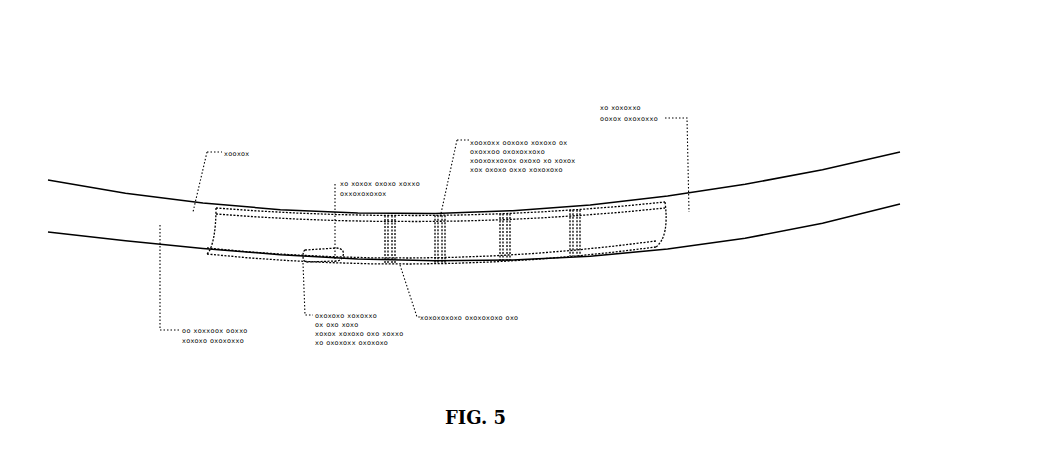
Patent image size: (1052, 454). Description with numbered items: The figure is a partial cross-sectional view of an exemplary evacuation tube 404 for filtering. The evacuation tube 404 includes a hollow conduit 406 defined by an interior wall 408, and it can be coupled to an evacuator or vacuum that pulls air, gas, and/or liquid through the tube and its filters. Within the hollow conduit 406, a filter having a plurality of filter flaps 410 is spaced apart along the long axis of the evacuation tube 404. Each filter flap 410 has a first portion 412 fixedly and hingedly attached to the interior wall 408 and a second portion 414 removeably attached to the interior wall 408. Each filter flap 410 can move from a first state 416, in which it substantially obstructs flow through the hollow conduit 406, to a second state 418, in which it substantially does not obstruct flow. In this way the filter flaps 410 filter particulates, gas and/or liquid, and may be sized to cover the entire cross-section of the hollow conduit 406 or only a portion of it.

The evacuation tube 404 is at (103, 190).
The hollow conduit 406 is at (620, 230).
The interior wall 408 is at (270, 220).
The filter flaps 410 is at (317, 261).
The first portion 412 is at (307, 257).
The second portion 414 is at (345, 243).
The first state 416 is at (575, 220).
The second state 418 is at (313, 253).